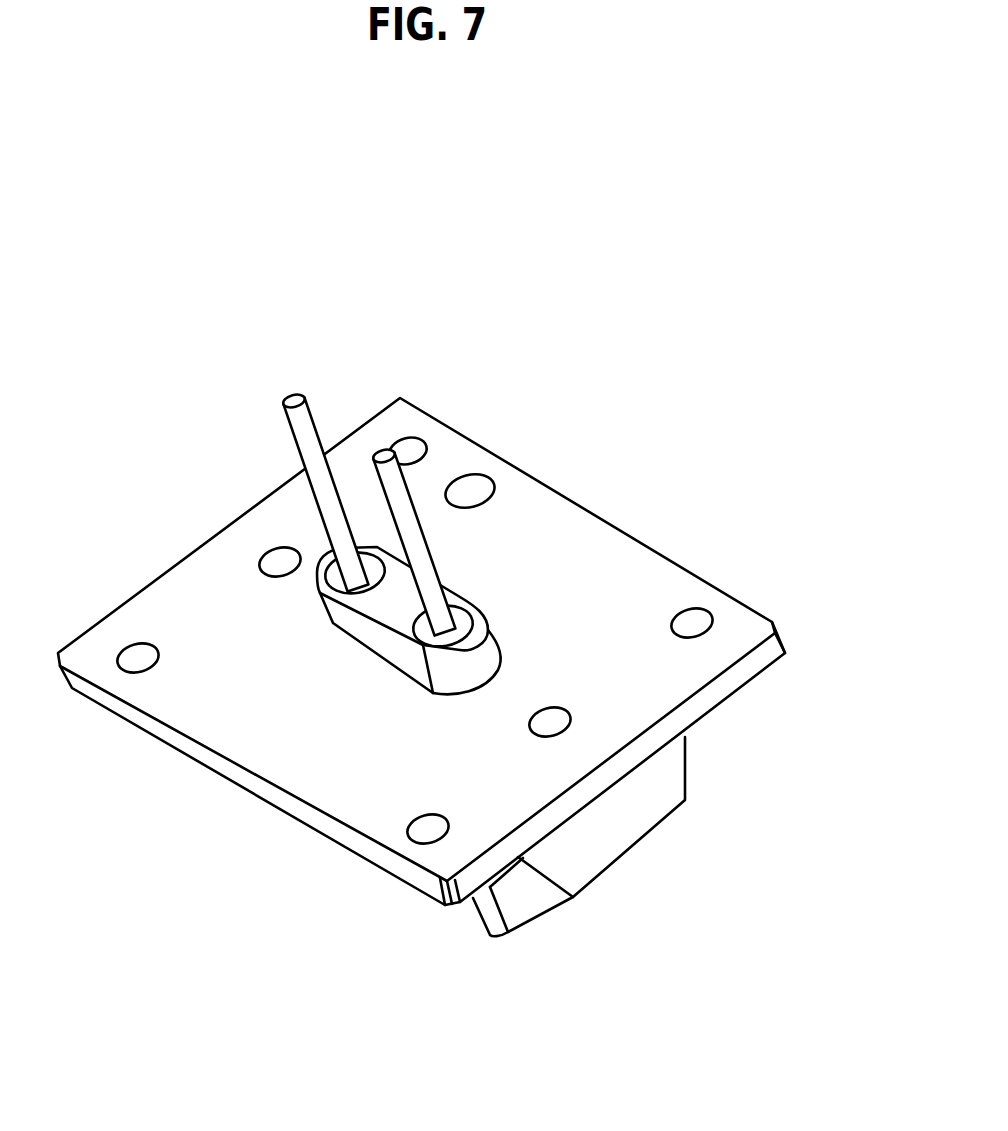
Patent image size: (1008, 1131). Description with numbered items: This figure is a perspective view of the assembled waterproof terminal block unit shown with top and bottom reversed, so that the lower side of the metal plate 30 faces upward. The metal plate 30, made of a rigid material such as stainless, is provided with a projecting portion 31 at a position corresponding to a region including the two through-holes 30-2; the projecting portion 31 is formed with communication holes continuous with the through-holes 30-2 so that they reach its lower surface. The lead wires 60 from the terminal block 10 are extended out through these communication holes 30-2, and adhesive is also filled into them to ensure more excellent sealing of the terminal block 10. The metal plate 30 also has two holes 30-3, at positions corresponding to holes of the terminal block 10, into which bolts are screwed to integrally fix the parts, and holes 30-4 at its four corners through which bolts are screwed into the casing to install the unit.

The terminal block 10 is at (622, 855).
The metal plate 30 is at (530, 526).
The through-holes 30-2 is at (335, 562).
The holes 30-3 is at (276, 561).
The holes 30-4 is at (704, 616).
The projecting portion 31 is at (467, 593).
The lead wires 60 is at (379, 450).